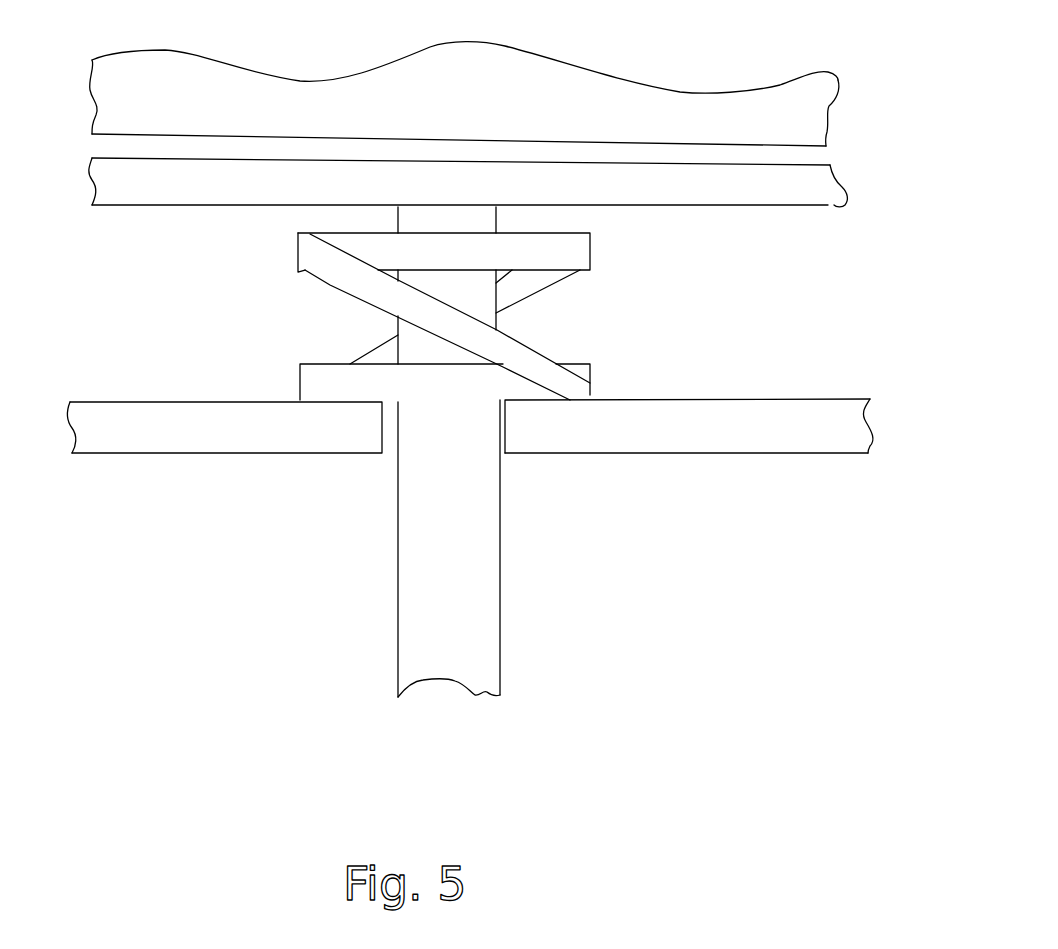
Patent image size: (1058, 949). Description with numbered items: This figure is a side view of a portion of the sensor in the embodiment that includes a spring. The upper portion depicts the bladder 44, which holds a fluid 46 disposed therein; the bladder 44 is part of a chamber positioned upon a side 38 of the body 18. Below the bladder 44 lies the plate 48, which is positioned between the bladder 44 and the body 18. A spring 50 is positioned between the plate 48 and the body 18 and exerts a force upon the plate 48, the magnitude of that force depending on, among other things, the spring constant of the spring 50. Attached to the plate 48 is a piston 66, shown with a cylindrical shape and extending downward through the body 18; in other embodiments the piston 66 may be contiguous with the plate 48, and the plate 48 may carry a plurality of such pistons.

The body 18 is at (805, 412).
The side 38 is at (138, 356).
The bladder 44 is at (827, 108).
The fluid 46 is at (797, 80).
The plate 48 is at (820, 193).
The spring 50 is at (583, 252).
The piston 66 is at (407, 575).